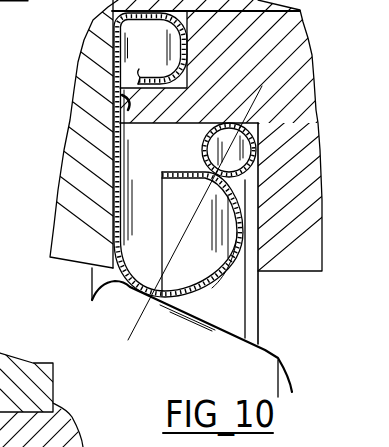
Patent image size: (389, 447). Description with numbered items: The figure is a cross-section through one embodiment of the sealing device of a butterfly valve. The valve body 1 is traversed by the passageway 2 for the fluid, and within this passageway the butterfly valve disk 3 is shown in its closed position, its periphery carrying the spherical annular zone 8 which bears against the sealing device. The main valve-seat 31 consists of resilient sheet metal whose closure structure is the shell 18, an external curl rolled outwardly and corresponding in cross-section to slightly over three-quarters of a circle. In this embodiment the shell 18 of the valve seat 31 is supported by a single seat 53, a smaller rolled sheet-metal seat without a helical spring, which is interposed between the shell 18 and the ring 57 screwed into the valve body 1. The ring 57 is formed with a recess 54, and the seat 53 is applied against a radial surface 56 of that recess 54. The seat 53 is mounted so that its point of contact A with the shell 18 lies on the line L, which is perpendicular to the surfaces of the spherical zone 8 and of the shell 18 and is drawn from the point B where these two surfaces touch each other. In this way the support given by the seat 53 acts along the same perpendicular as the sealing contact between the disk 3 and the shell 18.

The valve body 1 is at (90, 120).
The passageway 2 is at (73, 283).
The butterfly valve disk 3 is at (102, 312).
The spherical annular zone 8 is at (192, 339).
The shell 18 is at (213, 296).
The main valve-seat 31 is at (112, 82).
The seat 53 is at (239, 123).
The recess 54 is at (153, 210).
The radial surface 56 is at (256, 250).
The ring 57 is at (272, 92).
The point of contact A is at (201, 230).
The point of contact B is at (165, 303).
The line L is at (140, 323).